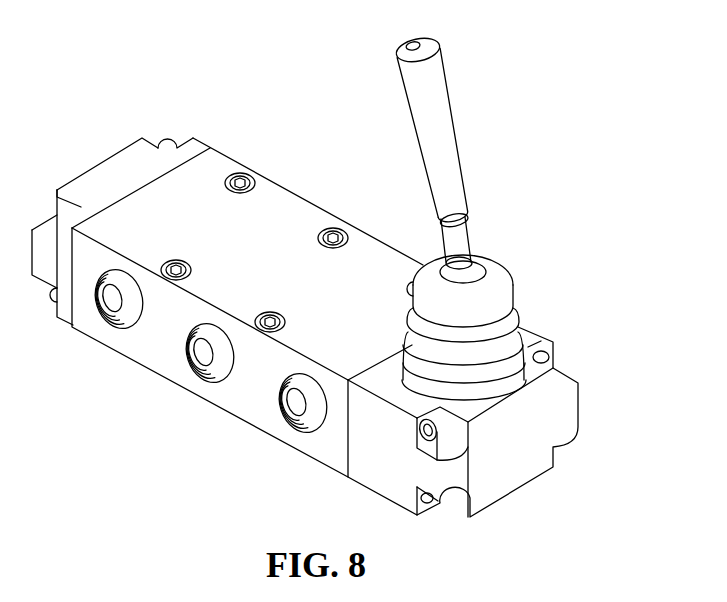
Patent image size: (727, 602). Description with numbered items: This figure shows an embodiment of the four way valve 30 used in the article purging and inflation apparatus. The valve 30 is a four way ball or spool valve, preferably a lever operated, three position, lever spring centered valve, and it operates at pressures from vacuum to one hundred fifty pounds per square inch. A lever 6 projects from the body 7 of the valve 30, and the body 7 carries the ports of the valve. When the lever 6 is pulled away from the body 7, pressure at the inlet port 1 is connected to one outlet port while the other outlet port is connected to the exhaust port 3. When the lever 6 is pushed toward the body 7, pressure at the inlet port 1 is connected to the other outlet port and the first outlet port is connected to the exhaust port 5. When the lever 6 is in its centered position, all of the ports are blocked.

The inlet port 1 is at (203, 382).
The exhaust port 3 is at (293, 437).
The exhaust port 5 is at (111, 331).
The lever 6 is at (458, 62).
The body 7 is at (417, 515).
The valve 30 is at (332, 358).